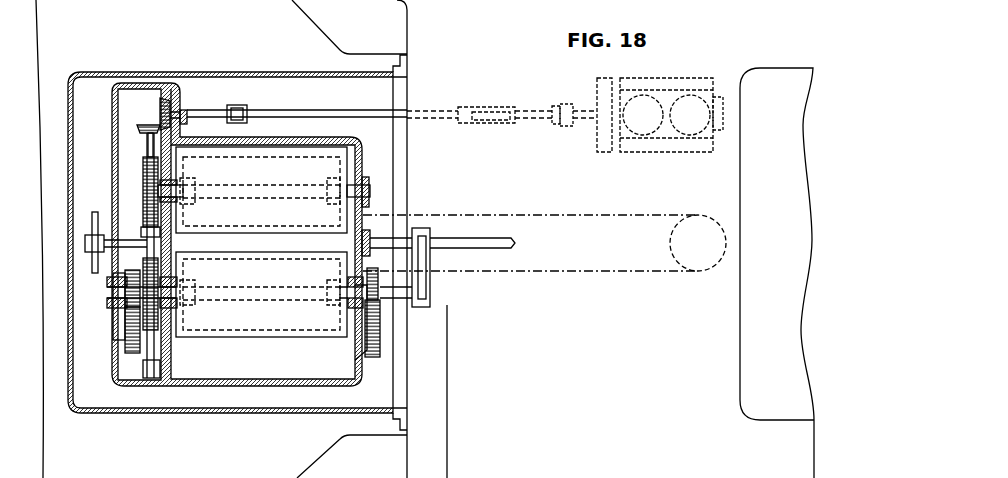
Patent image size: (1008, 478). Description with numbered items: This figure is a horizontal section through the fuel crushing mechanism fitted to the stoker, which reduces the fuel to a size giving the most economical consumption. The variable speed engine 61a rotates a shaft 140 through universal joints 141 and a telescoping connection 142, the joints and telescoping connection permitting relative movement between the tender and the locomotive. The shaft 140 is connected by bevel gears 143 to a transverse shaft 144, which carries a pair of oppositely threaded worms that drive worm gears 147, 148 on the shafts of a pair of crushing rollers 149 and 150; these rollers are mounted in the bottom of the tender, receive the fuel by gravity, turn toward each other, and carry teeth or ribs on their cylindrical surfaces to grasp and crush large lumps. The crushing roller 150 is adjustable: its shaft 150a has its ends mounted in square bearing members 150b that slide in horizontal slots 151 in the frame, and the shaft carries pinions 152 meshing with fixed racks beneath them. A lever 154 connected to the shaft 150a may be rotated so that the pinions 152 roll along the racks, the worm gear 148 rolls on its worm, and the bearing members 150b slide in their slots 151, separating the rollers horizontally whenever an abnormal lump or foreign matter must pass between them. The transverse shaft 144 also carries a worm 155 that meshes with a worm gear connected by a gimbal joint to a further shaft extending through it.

The bevel gears 143 is at (160, 120).
The transverse shaft 144 is at (148, 148).
The worm gear 147 is at (143, 185).
The worm 155 is at (143, 230).
The worm gear 148 is at (113, 272).
The horizontal slots 151 is at (116, 327).
The pinions 152 is at (128, 312).
The crushing roller 149 is at (273, 190).
The crushing roller 150 is at (262, 294).
The shaft 150a is at (306, 292).
The square bearing members 150b is at (353, 306).
The lever 154 is at (425, 266).
The shaft 140 is at (430, 114).
The telescoping connection 142 is at (495, 110).
The universal joints 141 is at (563, 108).
The variable speed engine 61a is at (670, 92).